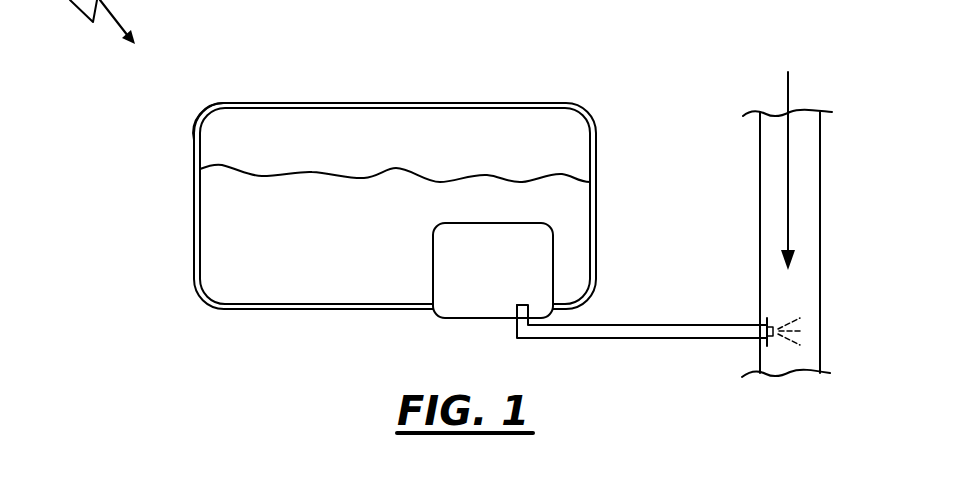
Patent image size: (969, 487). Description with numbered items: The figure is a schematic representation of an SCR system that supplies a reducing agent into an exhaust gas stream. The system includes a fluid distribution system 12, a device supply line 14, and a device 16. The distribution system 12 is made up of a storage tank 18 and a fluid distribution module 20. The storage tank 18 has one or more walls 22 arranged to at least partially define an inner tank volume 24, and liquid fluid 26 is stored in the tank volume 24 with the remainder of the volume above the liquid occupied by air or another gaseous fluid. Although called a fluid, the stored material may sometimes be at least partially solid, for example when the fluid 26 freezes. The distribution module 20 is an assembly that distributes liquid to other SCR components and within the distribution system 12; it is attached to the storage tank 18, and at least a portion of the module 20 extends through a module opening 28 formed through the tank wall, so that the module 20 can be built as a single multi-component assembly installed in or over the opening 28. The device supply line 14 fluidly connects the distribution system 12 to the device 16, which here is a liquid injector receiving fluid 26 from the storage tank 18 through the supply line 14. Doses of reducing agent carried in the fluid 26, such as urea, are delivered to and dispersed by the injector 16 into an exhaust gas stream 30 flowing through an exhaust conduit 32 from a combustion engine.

The fluid distribution system 12 is at (582, 96).
The device supply line 14 is at (634, 334).
The device 16 is at (772, 326).
The storage tank 18 is at (218, 108).
The fluid distribution module 20 is at (554, 250).
The walls 22 is at (266, 105).
The inner tank volume 24 is at (224, 146).
The liquid fluid 26 is at (315, 257).
The module opening 28 is at (437, 307).
The exhaust gas stream 30 is at (789, 90).
The exhaust conduit 32 is at (820, 148).